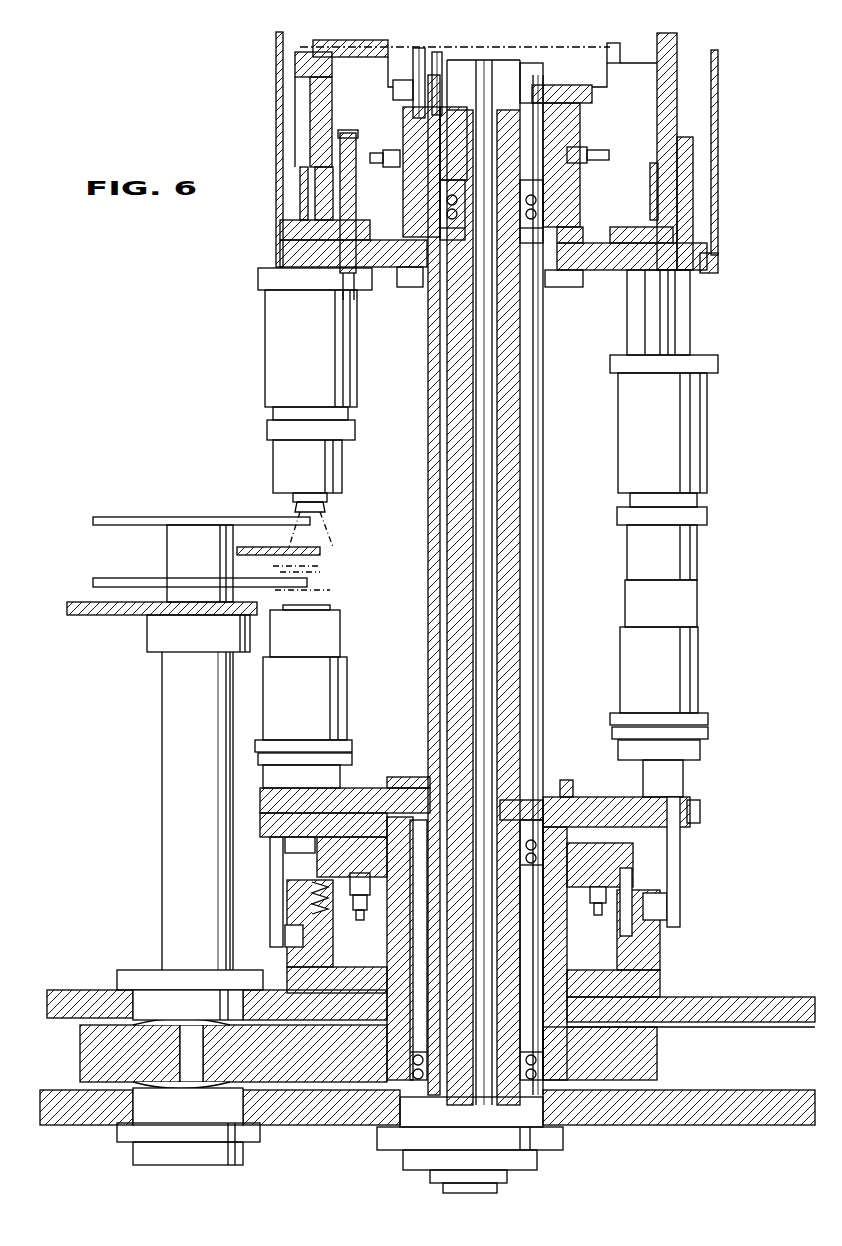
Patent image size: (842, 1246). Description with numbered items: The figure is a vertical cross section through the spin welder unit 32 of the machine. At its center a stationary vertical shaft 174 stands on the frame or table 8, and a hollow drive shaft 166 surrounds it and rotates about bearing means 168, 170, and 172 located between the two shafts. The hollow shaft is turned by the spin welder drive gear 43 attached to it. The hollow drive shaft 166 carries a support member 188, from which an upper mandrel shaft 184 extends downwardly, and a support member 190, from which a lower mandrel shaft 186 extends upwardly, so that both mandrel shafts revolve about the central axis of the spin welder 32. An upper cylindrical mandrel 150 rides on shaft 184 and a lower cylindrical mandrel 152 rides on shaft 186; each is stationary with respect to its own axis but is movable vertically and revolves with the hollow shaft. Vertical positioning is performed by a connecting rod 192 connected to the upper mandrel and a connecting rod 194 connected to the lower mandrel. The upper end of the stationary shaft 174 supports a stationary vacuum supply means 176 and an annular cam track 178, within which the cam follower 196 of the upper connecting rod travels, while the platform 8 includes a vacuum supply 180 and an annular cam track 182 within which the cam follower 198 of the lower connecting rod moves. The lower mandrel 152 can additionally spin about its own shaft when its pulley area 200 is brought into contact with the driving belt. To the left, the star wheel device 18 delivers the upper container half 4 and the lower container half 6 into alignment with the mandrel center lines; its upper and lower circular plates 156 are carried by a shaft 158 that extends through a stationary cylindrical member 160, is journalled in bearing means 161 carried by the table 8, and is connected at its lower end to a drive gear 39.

The spin welder unit 32 is at (509, 33).
The stationary vacuum supply means 176 is at (437, 40).
The annular cam track 178 is at (718, 66).
The cam follower 196 is at (332, 77).
The connecting rod 192 is at (280, 118).
The bearing means 172 is at (545, 210).
The shaft 184 is at (280, 258).
The support member 188 is at (632, 272).
The hollow drive shaft 166 is at (439, 330).
The upper cylindrical mandrel 150 is at (267, 368).
The stationary vertical shaft 174 is at (518, 400).
The star wheel device 18 is at (172, 522).
The upper container half 4 is at (336, 530).
The circular plates 156 is at (125, 578).
The lower container half 6 is at (333, 596).
The shaft 158 is at (160, 610).
The lower cylindrical mandrel 152 is at (347, 694).
The pulley area 200 is at (256, 742).
The support member 190 is at (372, 790).
The stationary cylindrical member 160 is at (169, 811).
The bearing means 170 is at (565, 800).
The shaft 186 is at (228, 791).
The connecting rod 194 is at (272, 885).
The cam follower 198 is at (290, 926).
The vacuum supply 180 is at (367, 921).
The annular cam track 182 is at (290, 953).
The frame or table 8 is at (738, 1012).
The drive gear 39 is at (100, 1058).
The spin welder drive gear 43 is at (648, 1072).
The bearing means 168 is at (545, 1088).
The bearing means 161 is at (244, 1153).